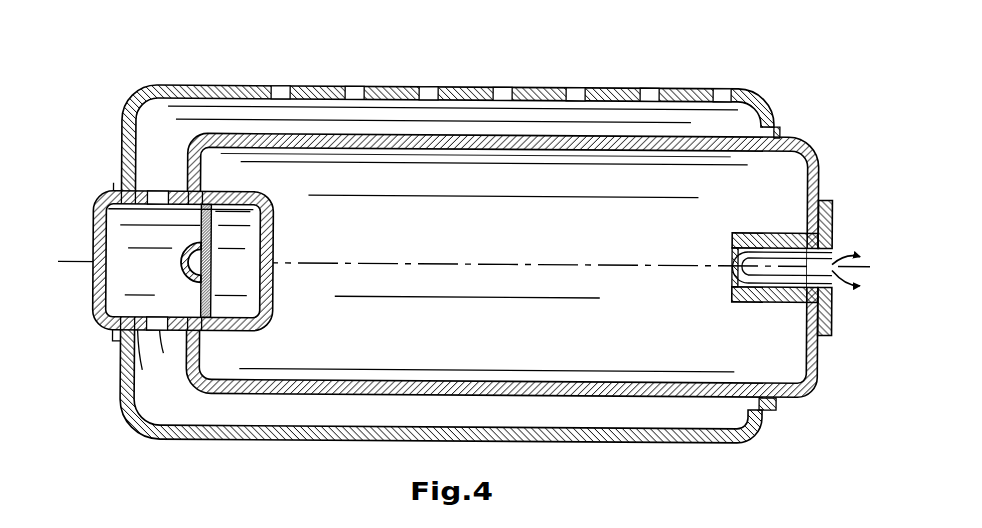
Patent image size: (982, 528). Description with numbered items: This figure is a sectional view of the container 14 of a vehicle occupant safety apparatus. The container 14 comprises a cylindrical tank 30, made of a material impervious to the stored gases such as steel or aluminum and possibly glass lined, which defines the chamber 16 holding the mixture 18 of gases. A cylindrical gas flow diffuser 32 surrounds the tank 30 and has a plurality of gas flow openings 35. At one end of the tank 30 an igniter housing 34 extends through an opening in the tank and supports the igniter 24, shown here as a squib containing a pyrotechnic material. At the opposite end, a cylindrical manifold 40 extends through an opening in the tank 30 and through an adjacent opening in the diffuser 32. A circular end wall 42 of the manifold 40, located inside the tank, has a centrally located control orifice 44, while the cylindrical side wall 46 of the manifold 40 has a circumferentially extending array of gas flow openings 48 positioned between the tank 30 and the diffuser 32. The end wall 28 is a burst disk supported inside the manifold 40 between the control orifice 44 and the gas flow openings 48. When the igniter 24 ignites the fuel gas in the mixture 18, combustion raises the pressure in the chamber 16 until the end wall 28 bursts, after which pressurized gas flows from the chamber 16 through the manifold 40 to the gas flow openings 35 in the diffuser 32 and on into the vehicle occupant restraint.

The container 14 is at (194, 79).
The chamber 16 is at (717, 348).
The mixture of gases 18 is at (500, 241).
The igniter 24 is at (802, 252).
The end wall 28 is at (184, 272).
The cylindrical tank 30 is at (198, 142).
The cylindrical gas flow diffuser 32 is at (241, 88).
The igniter housing 34 is at (832, 313).
The gas flow openings 35 is at (427, 87).
The cylindrical manifold 40 is at (94, 204).
The circular end wall 42 is at (276, 296).
The control orifice 44 is at (276, 262).
The cylindrical side wall 46 is at (122, 372).
The gas flow openings 48 is at (157, 334).